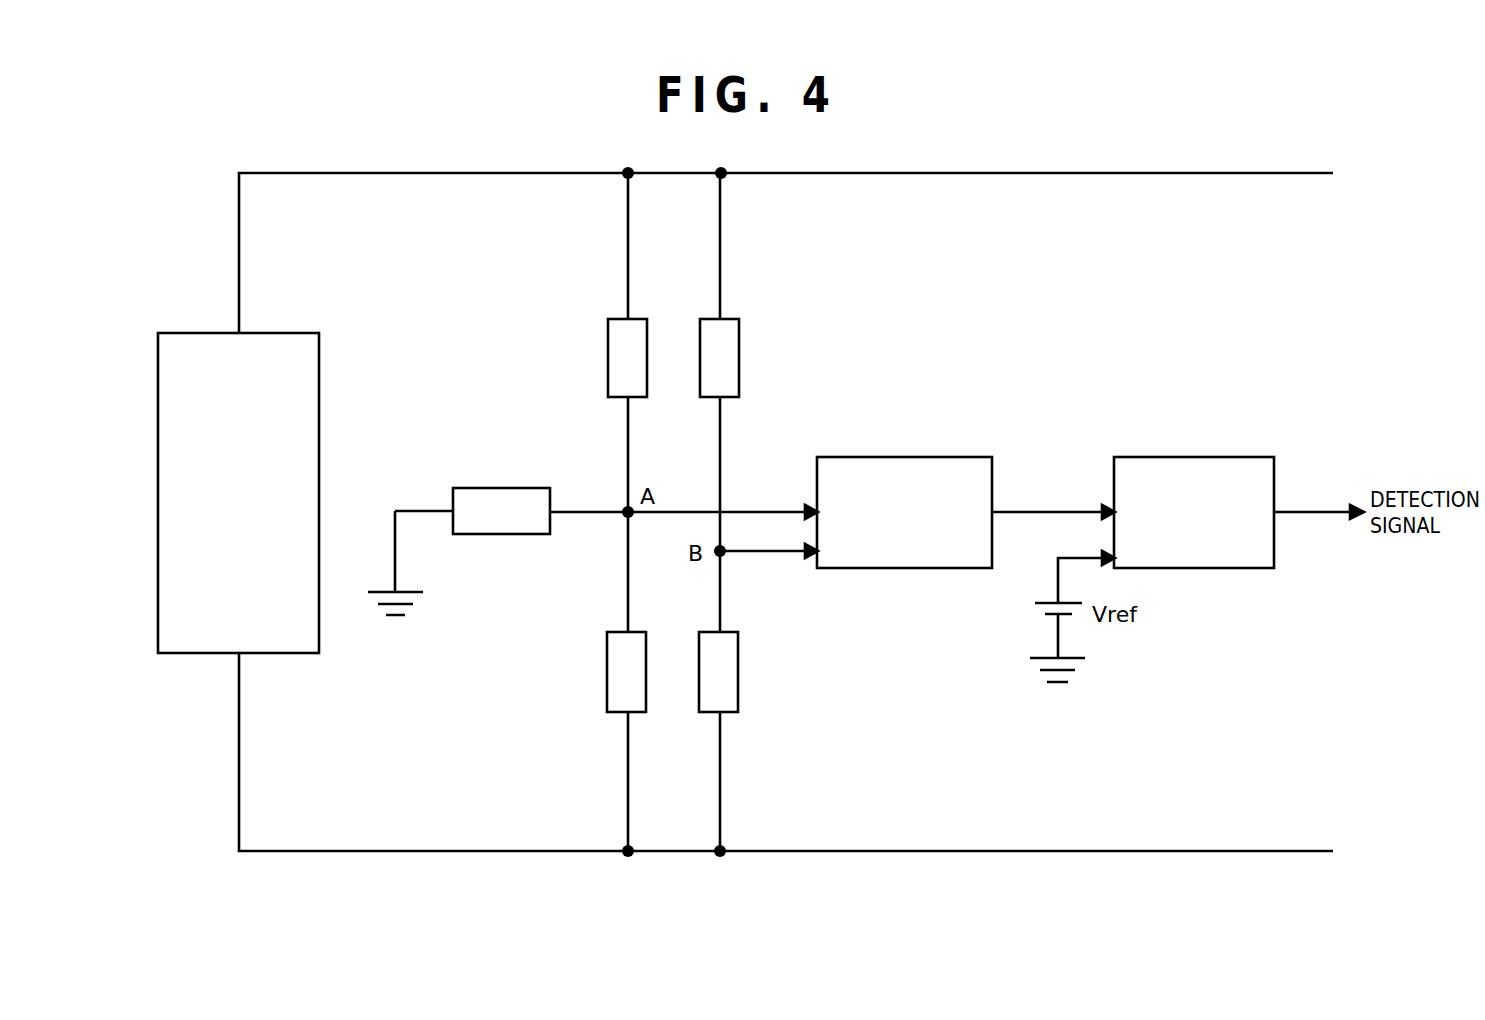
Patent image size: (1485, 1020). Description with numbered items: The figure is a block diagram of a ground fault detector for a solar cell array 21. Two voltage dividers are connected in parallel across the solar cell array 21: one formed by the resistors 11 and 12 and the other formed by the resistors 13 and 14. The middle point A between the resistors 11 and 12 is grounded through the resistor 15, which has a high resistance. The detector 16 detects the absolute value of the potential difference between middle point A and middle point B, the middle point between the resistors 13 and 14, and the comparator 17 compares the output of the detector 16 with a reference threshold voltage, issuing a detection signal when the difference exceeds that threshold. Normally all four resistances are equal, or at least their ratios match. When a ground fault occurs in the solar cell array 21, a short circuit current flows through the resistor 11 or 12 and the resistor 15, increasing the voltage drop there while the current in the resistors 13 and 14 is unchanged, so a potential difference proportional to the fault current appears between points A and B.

The resistor 11 is at (608, 333).
The resistor 12 is at (607, 669).
The resistor 13 is at (739, 336).
The resistor 14 is at (738, 681).
The resistor 15 is at (511, 488).
The detector 16 is at (897, 456).
The comparator 17 is at (1178, 456).
The solar cell array 21 is at (319, 371).